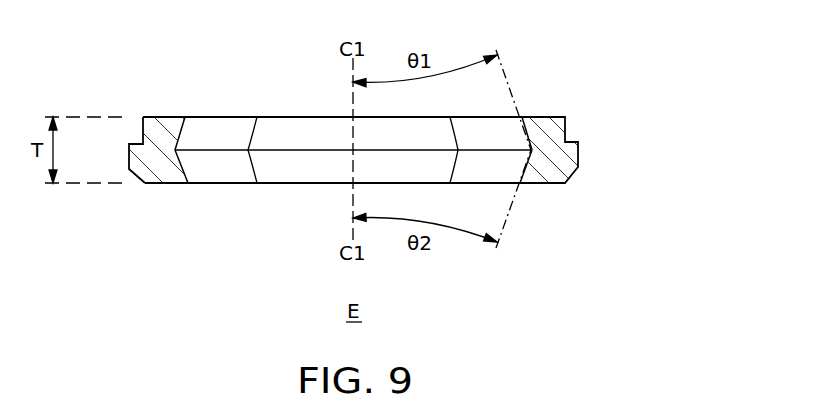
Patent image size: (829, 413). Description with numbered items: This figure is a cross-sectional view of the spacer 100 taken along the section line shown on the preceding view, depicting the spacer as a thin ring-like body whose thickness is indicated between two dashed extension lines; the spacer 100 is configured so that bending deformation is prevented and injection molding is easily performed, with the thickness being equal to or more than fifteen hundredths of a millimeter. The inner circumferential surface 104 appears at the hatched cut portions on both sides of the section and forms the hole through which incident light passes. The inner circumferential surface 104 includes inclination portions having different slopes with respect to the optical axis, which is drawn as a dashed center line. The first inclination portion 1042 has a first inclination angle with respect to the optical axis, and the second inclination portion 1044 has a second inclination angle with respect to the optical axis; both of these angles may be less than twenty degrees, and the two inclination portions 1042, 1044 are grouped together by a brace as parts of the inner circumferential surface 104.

The spacer 100 is at (307, 90).
The inner circumferential surface 104 is at (602, 151).
The first inclination portion 1042 is at (511, 113).
The second inclination portion 1044 is at (511, 187).